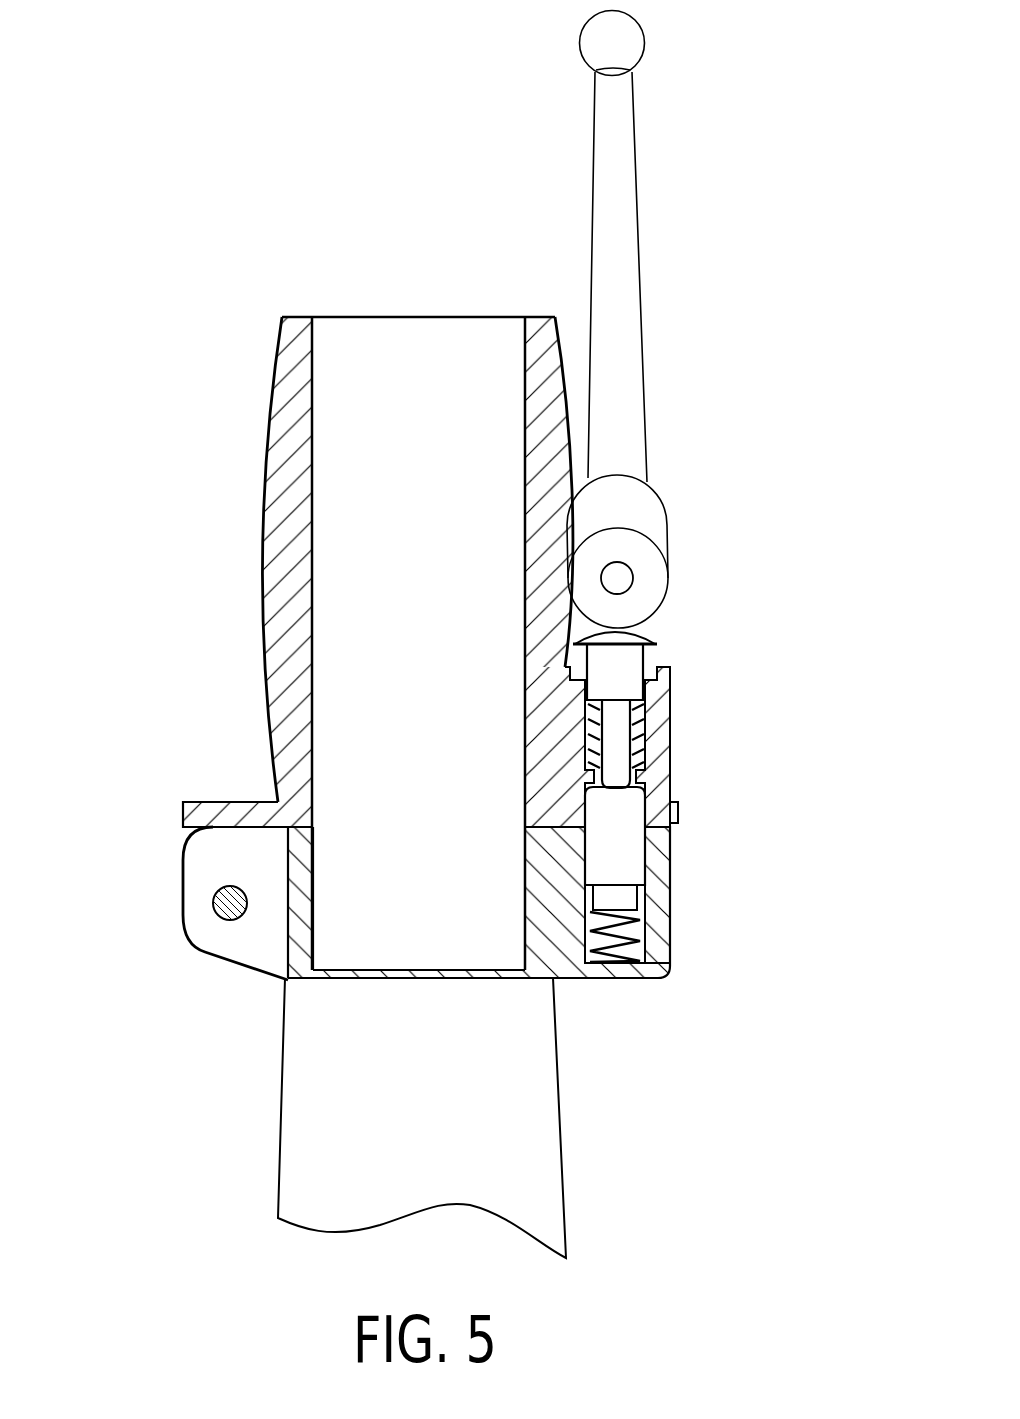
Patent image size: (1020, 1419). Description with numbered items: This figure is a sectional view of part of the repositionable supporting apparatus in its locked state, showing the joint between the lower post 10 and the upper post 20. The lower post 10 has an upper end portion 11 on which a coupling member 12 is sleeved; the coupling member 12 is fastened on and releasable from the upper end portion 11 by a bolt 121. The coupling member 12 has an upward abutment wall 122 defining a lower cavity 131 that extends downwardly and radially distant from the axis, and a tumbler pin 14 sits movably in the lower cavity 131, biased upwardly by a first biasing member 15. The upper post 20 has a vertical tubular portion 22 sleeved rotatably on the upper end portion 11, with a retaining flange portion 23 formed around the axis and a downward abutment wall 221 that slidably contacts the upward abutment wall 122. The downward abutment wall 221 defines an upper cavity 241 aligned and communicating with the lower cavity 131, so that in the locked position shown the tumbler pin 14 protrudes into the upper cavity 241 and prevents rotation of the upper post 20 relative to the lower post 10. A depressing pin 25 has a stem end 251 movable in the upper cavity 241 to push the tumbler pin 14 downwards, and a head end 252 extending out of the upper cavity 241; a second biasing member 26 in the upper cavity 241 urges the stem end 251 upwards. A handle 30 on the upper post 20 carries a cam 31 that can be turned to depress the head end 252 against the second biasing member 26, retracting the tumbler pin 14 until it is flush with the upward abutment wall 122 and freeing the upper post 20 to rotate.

The lower post 10 is at (577, 1072).
The upper end portion 11 is at (335, 640).
The coupling member 12 is at (297, 955).
The bolt 121 is at (213, 905).
The upward abutment wall 122 is at (243, 800).
The lower cavity 131 is at (647, 917).
The tumbler pin 14 is at (625, 857).
The first biasing member 15 is at (668, 966).
The upper post 20 is at (262, 350).
The vertical tubular portion 22 is at (283, 496).
The retaining flange portion 23 is at (183, 803).
The downward abutment wall 221 is at (663, 825).
The upper cavity 241 is at (645, 780).
The depressing pin 25 is at (620, 672).
The stem end 251 is at (612, 720).
The head end 252 is at (628, 630).
The second biasing member 26 is at (647, 740).
The handle 30 is at (652, 258).
The cam 31 is at (650, 515).